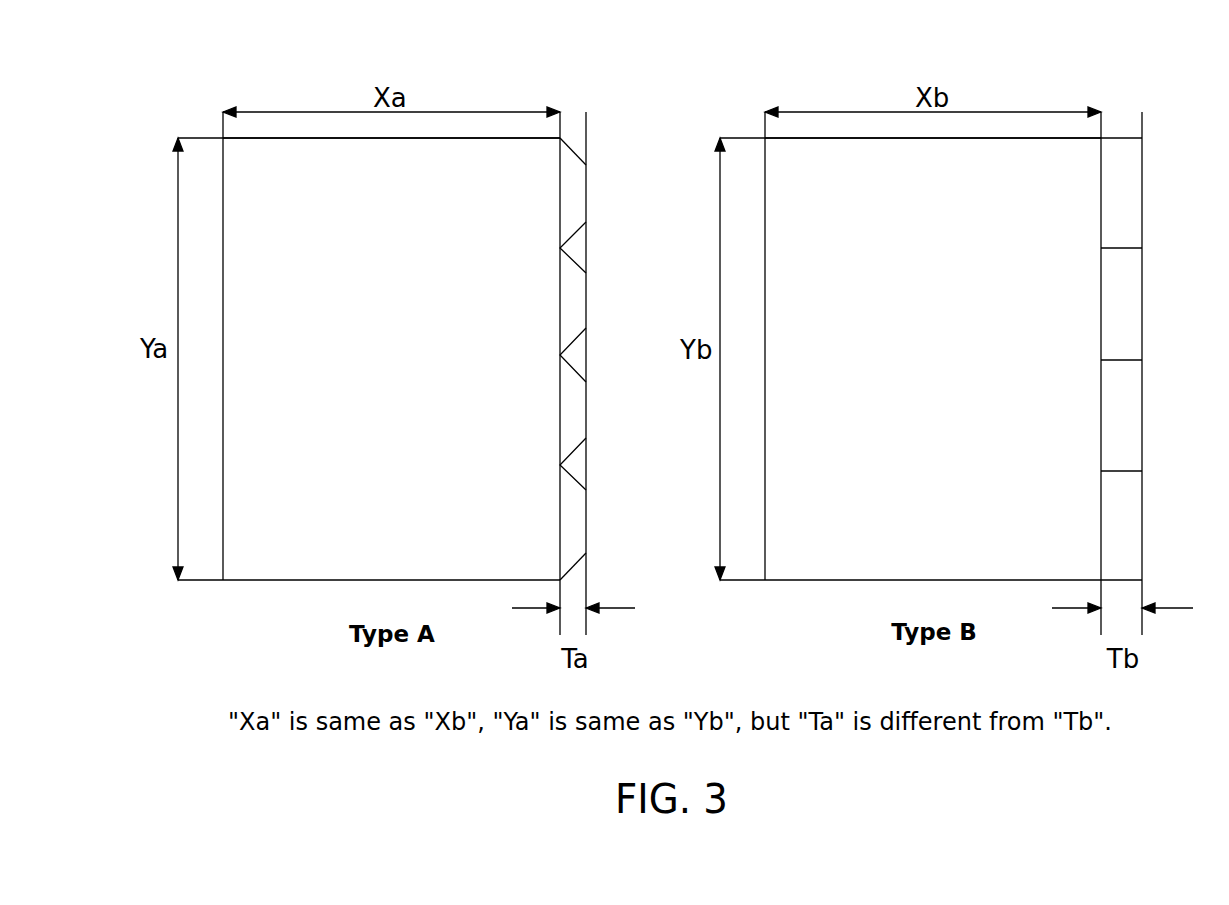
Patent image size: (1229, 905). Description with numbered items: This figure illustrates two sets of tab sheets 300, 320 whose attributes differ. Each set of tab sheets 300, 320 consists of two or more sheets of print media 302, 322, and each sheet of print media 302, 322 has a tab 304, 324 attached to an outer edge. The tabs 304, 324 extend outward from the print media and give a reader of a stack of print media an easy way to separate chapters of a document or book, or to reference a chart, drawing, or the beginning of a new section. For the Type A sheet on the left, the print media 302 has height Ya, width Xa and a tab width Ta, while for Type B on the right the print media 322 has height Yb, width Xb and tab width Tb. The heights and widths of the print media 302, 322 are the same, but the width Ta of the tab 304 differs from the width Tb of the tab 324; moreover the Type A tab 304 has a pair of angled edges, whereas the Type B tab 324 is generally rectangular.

The set of tab sheets 300 is at (260, 90).
The sheet of print media 302 is at (500, 98).
The tab 304 is at (603, 220).
The set of tab sheets 320 is at (802, 90).
The sheet of print media 322 is at (1033, 102).
The tab 324 is at (1152, 220).